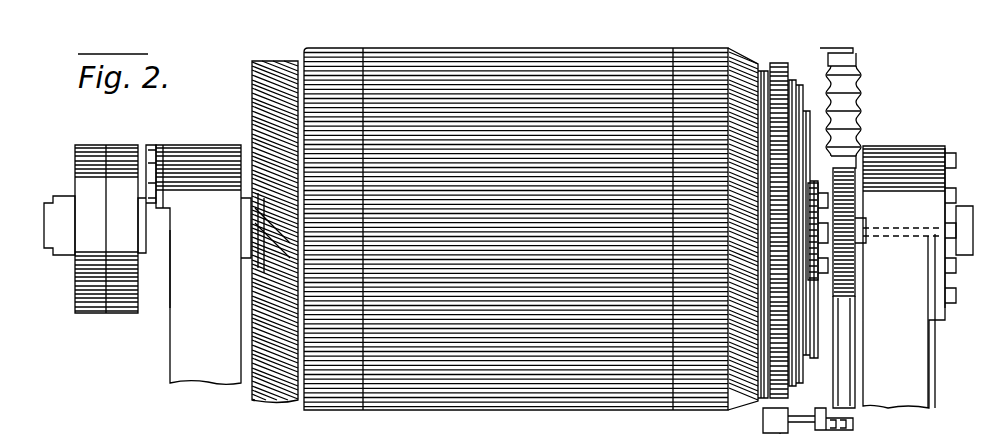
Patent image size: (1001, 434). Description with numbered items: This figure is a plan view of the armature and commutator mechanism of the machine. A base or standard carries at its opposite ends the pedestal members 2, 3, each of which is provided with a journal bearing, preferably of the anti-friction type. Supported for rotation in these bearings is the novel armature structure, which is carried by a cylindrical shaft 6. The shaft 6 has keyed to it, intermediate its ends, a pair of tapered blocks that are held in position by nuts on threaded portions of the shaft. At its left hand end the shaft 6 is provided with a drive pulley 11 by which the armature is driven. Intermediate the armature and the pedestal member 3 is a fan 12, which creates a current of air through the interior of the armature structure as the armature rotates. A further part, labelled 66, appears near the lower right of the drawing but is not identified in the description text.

The pedestal member 2 is at (912, 360).
The pedestal member 3 is at (168, 342).
The cylindrical shaft 6 is at (952, 237).
The drive pulley 11 is at (67, 285).
The fan 12 is at (244, 106).
The bracket 66 is at (756, 400).